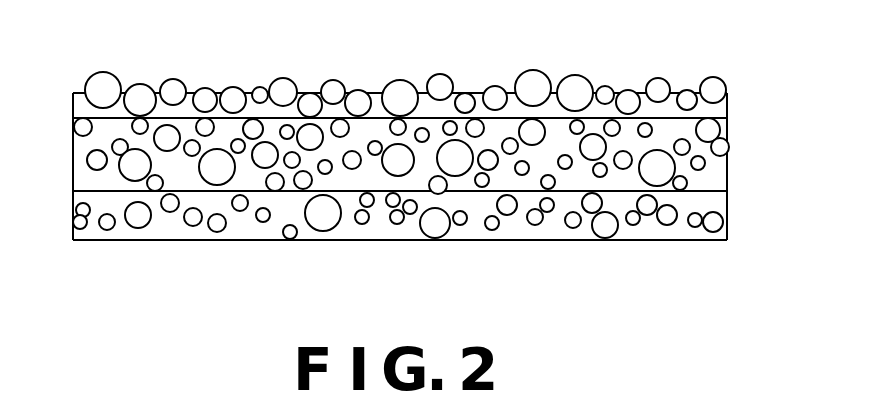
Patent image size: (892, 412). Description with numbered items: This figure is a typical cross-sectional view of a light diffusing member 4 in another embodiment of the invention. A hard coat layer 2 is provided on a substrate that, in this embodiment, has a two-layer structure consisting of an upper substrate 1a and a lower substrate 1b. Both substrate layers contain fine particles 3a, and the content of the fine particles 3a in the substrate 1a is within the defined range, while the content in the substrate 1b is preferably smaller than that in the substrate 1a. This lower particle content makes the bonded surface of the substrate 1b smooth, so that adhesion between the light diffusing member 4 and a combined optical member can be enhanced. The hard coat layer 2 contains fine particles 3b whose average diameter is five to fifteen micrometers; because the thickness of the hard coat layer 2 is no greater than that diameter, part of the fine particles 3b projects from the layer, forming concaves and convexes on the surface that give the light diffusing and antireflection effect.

The light diffusing member 4 is at (58, 73).
The hard coat layer 2 is at (717, 112).
The substrate 1a is at (715, 168).
The substrate 1b is at (715, 210).
The fine particles 3a is at (467, 176).
The fine particles 3b is at (540, 73).